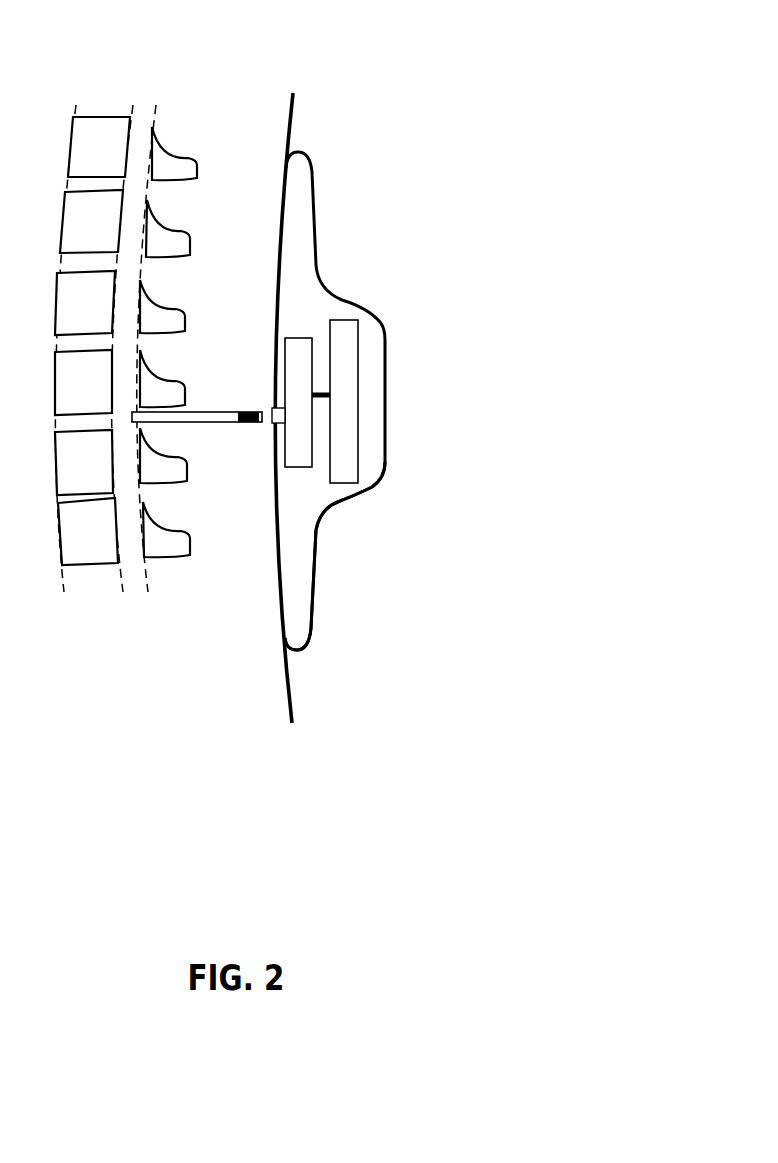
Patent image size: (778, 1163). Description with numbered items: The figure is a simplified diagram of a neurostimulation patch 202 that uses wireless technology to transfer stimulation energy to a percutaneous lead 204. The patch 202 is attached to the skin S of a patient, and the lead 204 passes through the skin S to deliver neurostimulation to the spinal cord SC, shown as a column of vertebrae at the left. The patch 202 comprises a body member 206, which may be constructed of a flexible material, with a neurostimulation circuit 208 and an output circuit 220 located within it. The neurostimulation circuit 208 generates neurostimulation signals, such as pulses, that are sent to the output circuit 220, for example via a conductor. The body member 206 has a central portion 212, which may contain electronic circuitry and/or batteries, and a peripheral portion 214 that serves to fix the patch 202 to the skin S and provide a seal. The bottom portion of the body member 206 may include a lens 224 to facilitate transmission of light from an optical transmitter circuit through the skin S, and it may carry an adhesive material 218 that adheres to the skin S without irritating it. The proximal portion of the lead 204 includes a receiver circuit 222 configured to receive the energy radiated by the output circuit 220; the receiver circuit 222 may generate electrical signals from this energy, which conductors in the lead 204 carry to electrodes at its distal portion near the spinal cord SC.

The spinal cord SC is at (142, 90).
The skin S is at (290, 113).
The neurostimulation patch 202 is at (319, 429).
The percutaneous lead 204 is at (228, 412).
The body member 206 is at (340, 507).
The neurostimulation circuit 208 is at (343, 402).
The central portion 212 is at (385, 435).
The peripheral portion 214 is at (315, 585).
The adhesive material 218 is at (277, 612).
The output circuit 220 is at (298, 362).
The receiver circuit 222 is at (252, 412).
The lens 224 is at (272, 423).